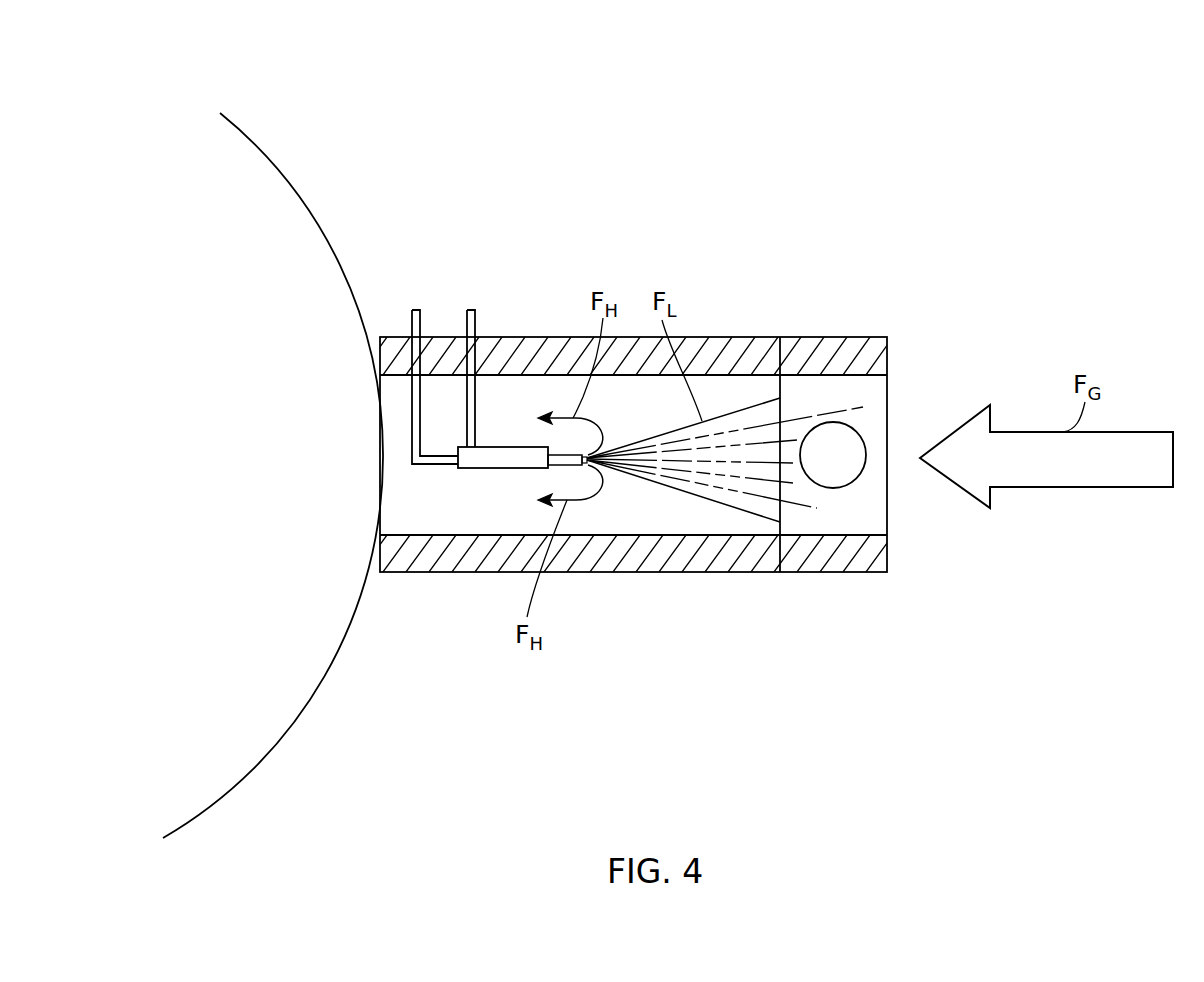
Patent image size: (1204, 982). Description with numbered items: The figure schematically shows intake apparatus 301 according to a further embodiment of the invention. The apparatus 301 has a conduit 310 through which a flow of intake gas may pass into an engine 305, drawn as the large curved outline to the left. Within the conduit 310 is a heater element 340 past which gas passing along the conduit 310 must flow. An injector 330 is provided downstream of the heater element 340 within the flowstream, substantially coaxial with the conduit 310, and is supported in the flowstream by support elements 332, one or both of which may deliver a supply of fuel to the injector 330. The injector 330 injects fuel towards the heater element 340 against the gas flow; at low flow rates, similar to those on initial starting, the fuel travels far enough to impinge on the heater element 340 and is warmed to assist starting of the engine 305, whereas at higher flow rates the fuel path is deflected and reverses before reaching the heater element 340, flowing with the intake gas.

The engine 305 is at (314, 301).
The intake apparatus 301 is at (753, 312).
The conduit 310 is at (627, 552).
The injector 330 is at (502, 447).
The support elements 332 is at (422, 400).
The heater element 340 is at (862, 484).